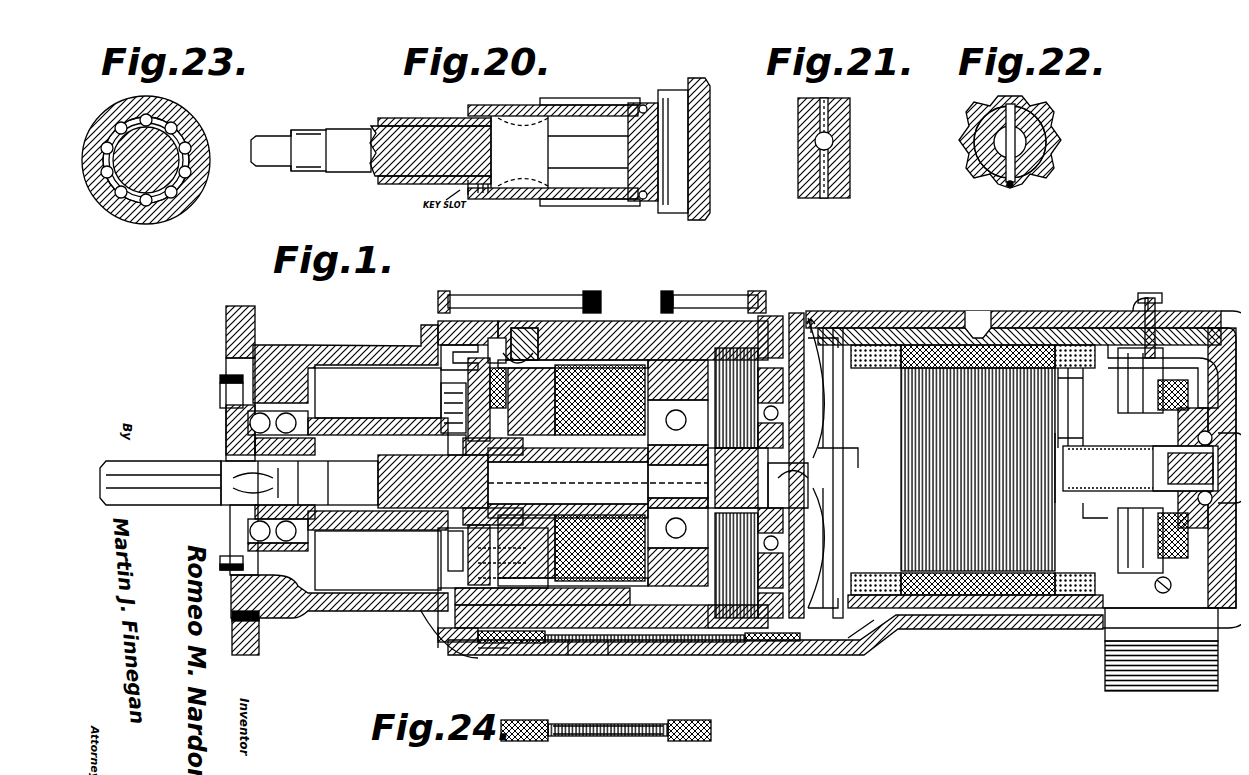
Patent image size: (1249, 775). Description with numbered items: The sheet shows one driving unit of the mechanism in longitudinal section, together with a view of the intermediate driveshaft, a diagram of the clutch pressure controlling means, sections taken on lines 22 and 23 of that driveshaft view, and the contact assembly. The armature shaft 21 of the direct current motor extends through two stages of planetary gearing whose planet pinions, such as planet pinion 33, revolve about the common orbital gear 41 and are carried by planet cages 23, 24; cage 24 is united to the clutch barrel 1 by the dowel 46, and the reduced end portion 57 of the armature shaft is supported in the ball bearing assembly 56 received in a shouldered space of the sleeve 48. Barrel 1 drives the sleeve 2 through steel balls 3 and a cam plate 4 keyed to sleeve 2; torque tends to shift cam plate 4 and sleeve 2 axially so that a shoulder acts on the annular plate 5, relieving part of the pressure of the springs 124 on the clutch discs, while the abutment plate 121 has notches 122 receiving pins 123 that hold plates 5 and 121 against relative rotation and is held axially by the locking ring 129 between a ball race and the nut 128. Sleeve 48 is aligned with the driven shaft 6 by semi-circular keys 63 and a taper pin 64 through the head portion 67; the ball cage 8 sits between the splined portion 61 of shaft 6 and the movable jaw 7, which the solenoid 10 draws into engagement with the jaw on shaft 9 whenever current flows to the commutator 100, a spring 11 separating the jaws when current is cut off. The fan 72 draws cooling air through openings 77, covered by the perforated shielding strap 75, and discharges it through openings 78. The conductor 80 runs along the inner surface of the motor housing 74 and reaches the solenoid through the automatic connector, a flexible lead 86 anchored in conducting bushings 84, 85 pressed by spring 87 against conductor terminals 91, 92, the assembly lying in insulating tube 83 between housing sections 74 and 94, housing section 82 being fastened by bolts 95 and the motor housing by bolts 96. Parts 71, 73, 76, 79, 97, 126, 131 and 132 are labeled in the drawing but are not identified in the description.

In FIG. 21, the barrel 1 is at (830, 110).
In FIG. 1, the barrel 1 is at (548, 320).
In FIG. 1, the sleeve 2 is at (600, 352).
In FIG. 21, the steel balls 3 is at (810, 140).
In FIG. 1, the steel balls 3 is at (514, 577).
In FIG. 21, the cam plate 4 is at (800, 128).
In FIG. 1, the cam plate 4 is at (515, 325).
In FIG. 1, the annular plate 5 is at (600, 473).
In FIG. 23, the driven shaft 6 is at (148, 158).
In FIG. 20, the driven shaft 6 is at (371, 151).
In FIG. 1, the driven shaft 6 is at (433, 481).
In FIG. 23, the movable jaw 7 is at (174, 200).
In FIG. 1, the movable jaw 7 is at (408, 415).
In FIG. 23, the cage 8 is at (133, 195).
In FIG. 1, the cage 8 is at (420, 510).
In FIG. 1, the shaft 9 is at (178, 450).
In FIG. 1, the solenoid 10 is at (378, 479).
In FIG. 1, the spring 11 is at (355, 497).
In FIG. 1, the armature shaft 21 is at (961, 469).
In FIG. 20, the section line 22— 22 is at (640, 219).
In FIG. 20, the planet cage 23 is at (392, 192).
In FIG. 1, the planet cage 23 is at (736, 530).
In FIG. 1, the planet cage 24 is at (650, 352).
In FIG. 1, the planet pinion 33 is at (812, 322).
In FIG. 1, the common orbital gear 41 is at (775, 318).
In FIG. 1, the dowel 46 is at (581, 616).
In FIG. 20, the sleeve 48 is at (580, 98).
In FIG. 22, the sleeve 48 is at (1040, 158).
In FIG. 1, the sleeve 48 is at (598, 483).
In FIG. 1, the ball bearing assembly 56 is at (678, 474).
In FIG. 1, the reduced end portion 57 is at (738, 483).
In FIG. 23, the splined portion 61 is at (170, 120).
In FIG. 20, the splined portion 61 is at (415, 115).
In FIG. 1, the splined portion 61 is at (450, 635).
In FIG. 20, the semi-circular keys 63 is at (503, 180).
In FIG. 1, the semi-circular keys 63 is at (497, 481).
In FIG. 22, the taper pin 64 is at (1002, 178).
In FIG. 1, the taper pin 64 is at (659, 481).
In FIG. 20, the head portion 67 is at (669, 149).
In FIG. 22, the head portion 67 is at (1028, 116).
In FIG. 1, the bearing support 71 is at (788, 481).
In FIG. 1, the fan 72 is at (810, 410).
In FIG. 1, the spacer 73 is at (838, 464).
In FIG. 1, the motor housing 74 is at (940, 280).
In FIG. 1, the shielding strap 75 is at (1150, 300).
In FIG. 1, the threaded hub / coil 76 is at (1115, 608).
In FIG. 1, the openings 77 is at (1130, 358).
In FIG. 1, the openings 78 is at (840, 320).
In FIG. 1, the shell joint 79 is at (880, 632).
In FIG. 1, the conductor 80 is at (905, 625).
In FIG. 1, the housing section 82 is at (565, 640).
In FIG. 1, the insulating tube 83 is at (603, 640).
In FIG. 24, the bushing 84 is at (515, 733).
In FIG. 1, the bushing 84 is at (520, 635).
In FIG. 24, the bushing 85 is at (683, 733).
In FIG. 24, the flexible lead 86 is at (617, 716).
In FIG. 1, the flexible lead 86 is at (690, 633).
In FIG. 24, the spring 87 is at (590, 728).
In FIG. 1, the spring 87 is at (638, 634).
In FIG. 1, the conductor terminal 91 is at (478, 640).
In FIG. 1, the conductor terminal 92 is at (745, 634).
In FIG. 1, the housing section 94 is at (370, 600).
In FIG. 1, the bolts 95 is at (470, 287).
In FIG. 1, the bolts 96 is at (705, 287).
In FIG. 1, the mounting flange 97 is at (240, 300).
In FIG. 1, the commutator 100 is at (1148, 470).
In FIG. 1, the abutment plate 121 is at (460, 395).
In FIG. 1, the notches 122 is at (459, 357).
In FIG. 1, the pins 123 is at (445, 385).
In FIG. 1, the springs 124 is at (460, 550).
In FIG. 1, the sleeve 126 is at (568, 483).
In FIG. 1, the nut 128 is at (440, 545).
In FIG. 1, the locking ring 129 is at (473, 459).
In FIG. 1, the plunger 131 is at (488, 335).
In FIG. 1, the cover plate 132 is at (435, 610).